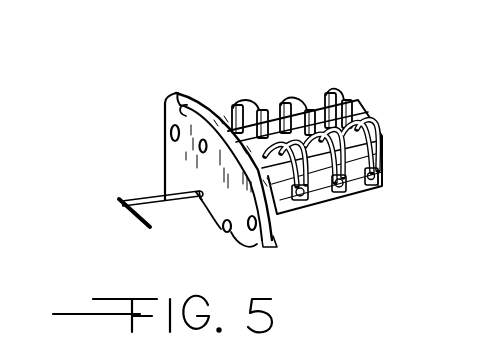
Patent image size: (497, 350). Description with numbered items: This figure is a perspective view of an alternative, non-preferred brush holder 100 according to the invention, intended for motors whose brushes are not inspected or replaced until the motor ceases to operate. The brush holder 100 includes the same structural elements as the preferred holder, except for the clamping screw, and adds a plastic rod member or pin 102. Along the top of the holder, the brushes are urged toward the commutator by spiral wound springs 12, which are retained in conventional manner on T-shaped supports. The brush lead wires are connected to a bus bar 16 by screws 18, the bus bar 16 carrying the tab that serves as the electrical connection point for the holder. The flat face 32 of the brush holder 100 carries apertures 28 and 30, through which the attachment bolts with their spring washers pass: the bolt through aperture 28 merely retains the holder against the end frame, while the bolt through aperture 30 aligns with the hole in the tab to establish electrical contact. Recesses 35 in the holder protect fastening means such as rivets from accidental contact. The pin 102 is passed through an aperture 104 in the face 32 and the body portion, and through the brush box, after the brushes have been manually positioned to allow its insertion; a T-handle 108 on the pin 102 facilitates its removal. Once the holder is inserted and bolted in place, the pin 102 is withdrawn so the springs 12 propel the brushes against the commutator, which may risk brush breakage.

The brush holder 100 is at (343, 144).
The spiral wound springs 12 is at (341, 92).
The bus bar 16 is at (358, 186).
The screws 18 is at (303, 201).
The aperture 28 is at (169, 133).
The aperture 30 is at (252, 230).
The face 32 is at (191, 94).
The recesses 35 is at (199, 147).
The pin 102 is at (156, 197).
The aperture 104 is at (203, 203).
The T-handle 108 is at (118, 204).